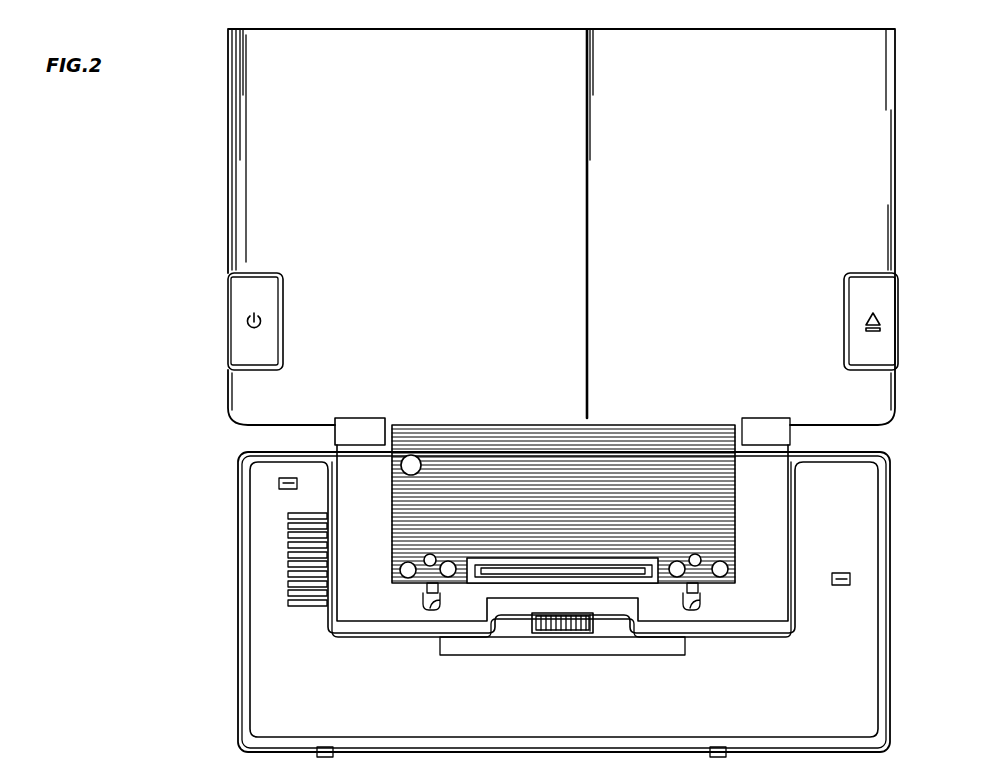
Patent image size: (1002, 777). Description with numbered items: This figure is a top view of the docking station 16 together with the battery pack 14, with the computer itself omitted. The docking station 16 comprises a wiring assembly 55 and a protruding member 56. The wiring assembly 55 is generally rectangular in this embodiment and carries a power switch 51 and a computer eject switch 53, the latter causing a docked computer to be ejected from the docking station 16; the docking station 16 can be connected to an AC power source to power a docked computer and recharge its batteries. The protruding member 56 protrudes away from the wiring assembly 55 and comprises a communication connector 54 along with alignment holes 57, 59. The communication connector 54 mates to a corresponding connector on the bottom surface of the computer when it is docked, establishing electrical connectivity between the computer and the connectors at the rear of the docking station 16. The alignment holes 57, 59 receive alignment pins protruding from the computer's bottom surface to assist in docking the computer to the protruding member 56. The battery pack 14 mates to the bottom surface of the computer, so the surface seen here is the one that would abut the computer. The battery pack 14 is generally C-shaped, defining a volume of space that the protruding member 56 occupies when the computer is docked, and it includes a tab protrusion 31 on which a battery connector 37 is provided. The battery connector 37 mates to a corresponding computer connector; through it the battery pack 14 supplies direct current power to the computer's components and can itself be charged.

The battery pack 14 is at (237, 593).
The docking station 16 is at (900, 183).
The tab protrusion 31 is at (594, 632).
The battery connector 37 is at (558, 634).
The power switch 51 is at (243, 338).
The computer eject switch 53 is at (885, 300).
The communication connector 54 is at (597, 570).
The wiring assembly 55 is at (255, 222).
The protruding member 56 is at (337, 445).
The alignment hole 57 is at (430, 612).
The alignment hole 59 is at (693, 610).